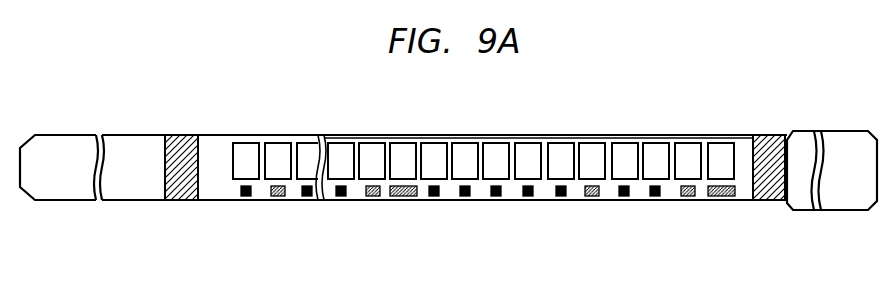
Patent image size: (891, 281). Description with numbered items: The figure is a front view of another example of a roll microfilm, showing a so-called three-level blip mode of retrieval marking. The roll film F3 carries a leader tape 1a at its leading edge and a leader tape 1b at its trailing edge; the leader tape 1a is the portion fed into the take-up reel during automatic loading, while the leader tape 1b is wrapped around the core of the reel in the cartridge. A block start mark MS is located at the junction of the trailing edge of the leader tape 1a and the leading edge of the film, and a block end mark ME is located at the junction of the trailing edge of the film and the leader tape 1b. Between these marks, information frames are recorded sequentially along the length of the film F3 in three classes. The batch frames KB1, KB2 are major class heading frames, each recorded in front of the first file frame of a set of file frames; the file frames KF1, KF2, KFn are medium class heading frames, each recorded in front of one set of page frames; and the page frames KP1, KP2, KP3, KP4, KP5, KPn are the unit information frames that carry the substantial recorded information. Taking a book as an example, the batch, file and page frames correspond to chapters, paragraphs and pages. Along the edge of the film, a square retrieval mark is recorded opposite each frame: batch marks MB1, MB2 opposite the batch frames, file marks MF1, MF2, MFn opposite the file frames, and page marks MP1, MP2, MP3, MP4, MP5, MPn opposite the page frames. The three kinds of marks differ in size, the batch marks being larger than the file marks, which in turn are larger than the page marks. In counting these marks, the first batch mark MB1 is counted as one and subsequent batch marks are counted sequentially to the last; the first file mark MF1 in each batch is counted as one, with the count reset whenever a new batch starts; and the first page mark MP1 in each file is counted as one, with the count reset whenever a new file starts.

The leader tape 1a is at (832, 132).
The leader tape 1b is at (118, 140).
The roll film F3 is at (220, 135).
The block end mark ME is at (180, 135).
The block start mark MS is at (766, 136).
The page frame KP1 is at (246, 143).
The page frame KP2 is at (528, 143).
The page frame KP3 is at (496, 143).
The page frame KP4 is at (465, 143).
The page frame KP5 is at (434, 143).
The page frame KPn is at (307, 143).
The file frame KF1 is at (373, 143).
The file frame KF2 is at (592, 143).
The file frame KFn is at (278, 143).
The batch frame KB1 is at (721, 143).
The batch frame KB2 is at (403, 143).
The page mark MP1 is at (246, 200).
The page mark MP2 is at (528, 200).
The page mark MP3 is at (496, 200).
The page mark MP4 is at (465, 200).
The page mark MP5 is at (434, 200).
The page mark MPn is at (307, 200).
The file mark MF1 is at (373, 200).
The file mark MF2 is at (592, 200).
The file mark MFn is at (278, 200).
The batch mark MB1 is at (721, 200).
The batch mark MB2 is at (403, 200).